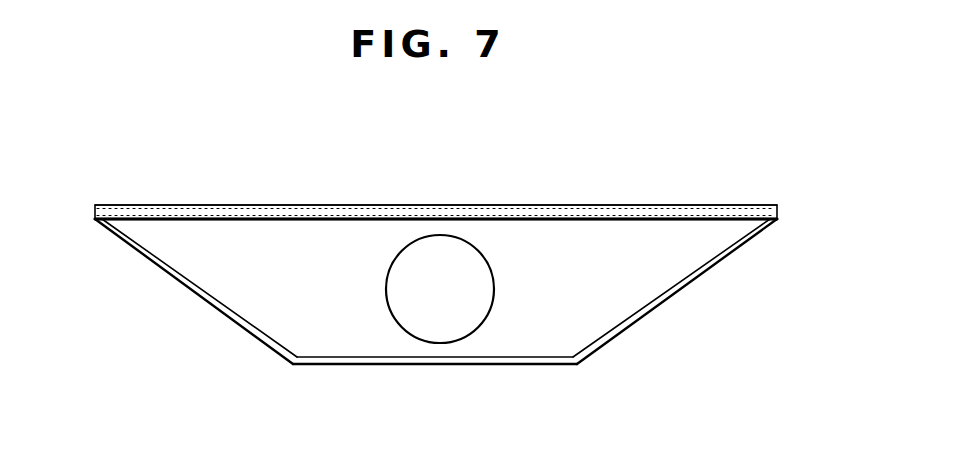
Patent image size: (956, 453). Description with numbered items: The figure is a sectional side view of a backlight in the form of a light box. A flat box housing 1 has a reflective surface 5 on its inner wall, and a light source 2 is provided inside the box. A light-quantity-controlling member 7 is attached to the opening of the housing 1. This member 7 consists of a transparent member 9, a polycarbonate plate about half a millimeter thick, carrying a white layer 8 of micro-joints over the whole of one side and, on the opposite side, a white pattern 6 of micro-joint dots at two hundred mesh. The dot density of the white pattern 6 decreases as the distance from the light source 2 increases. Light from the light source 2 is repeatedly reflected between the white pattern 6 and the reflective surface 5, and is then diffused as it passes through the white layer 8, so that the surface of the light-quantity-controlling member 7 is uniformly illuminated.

The housing 1 is at (416, 365).
The light source 2 is at (479, 330).
The reflective surface 5 is at (352, 357).
The white pattern 6 is at (380, 220).
The light-quantity-controlling member 7 is at (587, 206).
The white layer 8 is at (296, 205).
The transparent member 9 is at (664, 220).